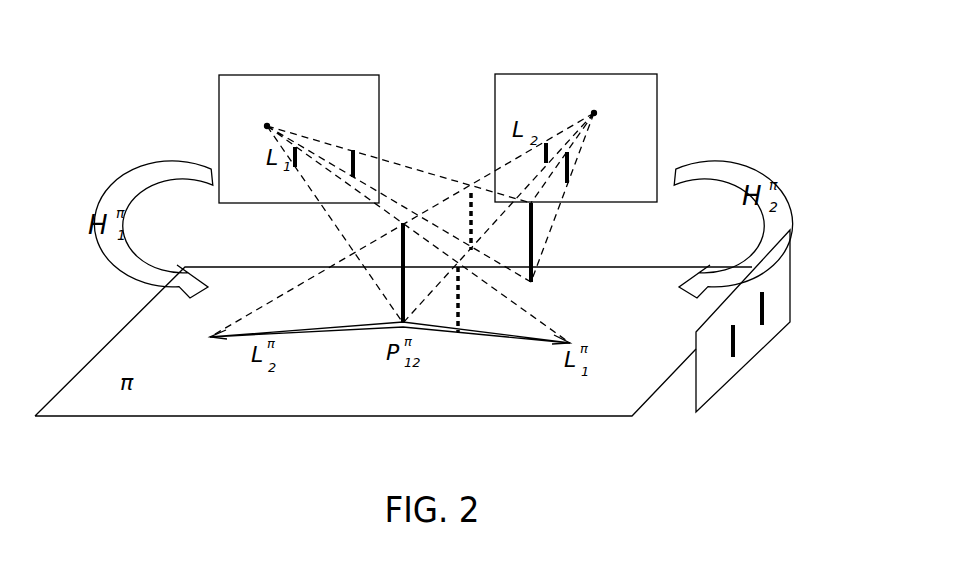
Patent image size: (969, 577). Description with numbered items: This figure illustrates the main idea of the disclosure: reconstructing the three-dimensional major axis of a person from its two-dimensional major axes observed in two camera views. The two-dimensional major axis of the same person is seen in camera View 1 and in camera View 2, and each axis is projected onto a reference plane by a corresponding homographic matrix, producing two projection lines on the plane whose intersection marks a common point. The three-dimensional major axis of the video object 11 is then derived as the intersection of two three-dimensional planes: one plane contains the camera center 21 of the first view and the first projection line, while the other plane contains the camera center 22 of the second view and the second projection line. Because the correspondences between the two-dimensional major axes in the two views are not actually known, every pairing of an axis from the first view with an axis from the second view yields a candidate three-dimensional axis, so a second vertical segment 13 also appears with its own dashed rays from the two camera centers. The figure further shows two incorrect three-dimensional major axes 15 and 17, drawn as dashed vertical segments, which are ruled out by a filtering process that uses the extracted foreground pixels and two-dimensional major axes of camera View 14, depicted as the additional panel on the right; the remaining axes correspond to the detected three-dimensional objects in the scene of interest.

The camera View 1 is at (219, 112).
The camera View 2 is at (657, 112).
The camera center 21 is at (267, 126).
The camera center 22 is at (594, 113).
The video object 11 is at (401, 312).
The second vertical line segment 13 is at (533, 262).
The camera View 14 is at (792, 260).
The incorrect 3D MA 15 is at (460, 315).
The incorrect 3D MA 17 is at (469, 193).